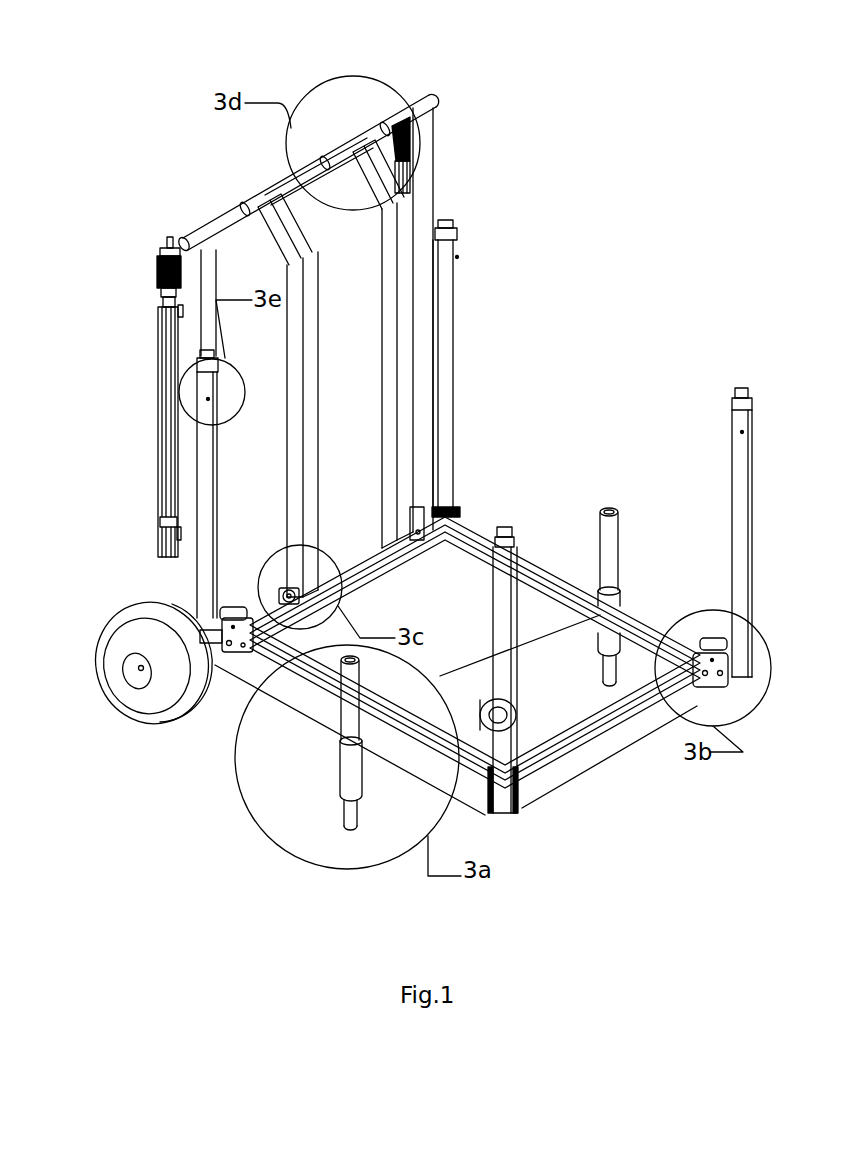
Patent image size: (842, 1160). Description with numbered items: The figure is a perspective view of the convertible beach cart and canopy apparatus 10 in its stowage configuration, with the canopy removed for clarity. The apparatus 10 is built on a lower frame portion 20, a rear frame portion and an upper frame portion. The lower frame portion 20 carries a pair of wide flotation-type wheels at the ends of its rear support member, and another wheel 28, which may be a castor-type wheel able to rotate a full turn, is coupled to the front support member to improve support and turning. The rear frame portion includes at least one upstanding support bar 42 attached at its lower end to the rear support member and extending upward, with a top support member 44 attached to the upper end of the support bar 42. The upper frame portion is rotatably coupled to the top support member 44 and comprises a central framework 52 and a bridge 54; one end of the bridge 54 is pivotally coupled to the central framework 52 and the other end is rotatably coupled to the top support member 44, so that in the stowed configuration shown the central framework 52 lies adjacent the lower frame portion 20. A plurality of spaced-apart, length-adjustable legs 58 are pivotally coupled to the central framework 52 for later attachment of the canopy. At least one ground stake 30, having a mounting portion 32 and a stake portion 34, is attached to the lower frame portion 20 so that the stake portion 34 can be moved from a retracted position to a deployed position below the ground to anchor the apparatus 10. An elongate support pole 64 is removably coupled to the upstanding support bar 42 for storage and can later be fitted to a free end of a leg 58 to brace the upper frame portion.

The convertible beach cart and canopy apparatus 10 is at (594, 95).
The lower frame portion 20 is at (225, 701).
The wheel 28 is at (520, 730).
The ground stake 30 is at (428, 655).
The mounting portion 32 is at (613, 600).
The stake portion 34 is at (608, 553).
The upstanding support bar 42 is at (423, 190).
The top support member 44 is at (218, 227).
The central framework 52 is at (632, 736).
The bridge 54 is at (350, 396).
The leg 58 is at (448, 273).
The elongate support pole 64 is at (163, 308).